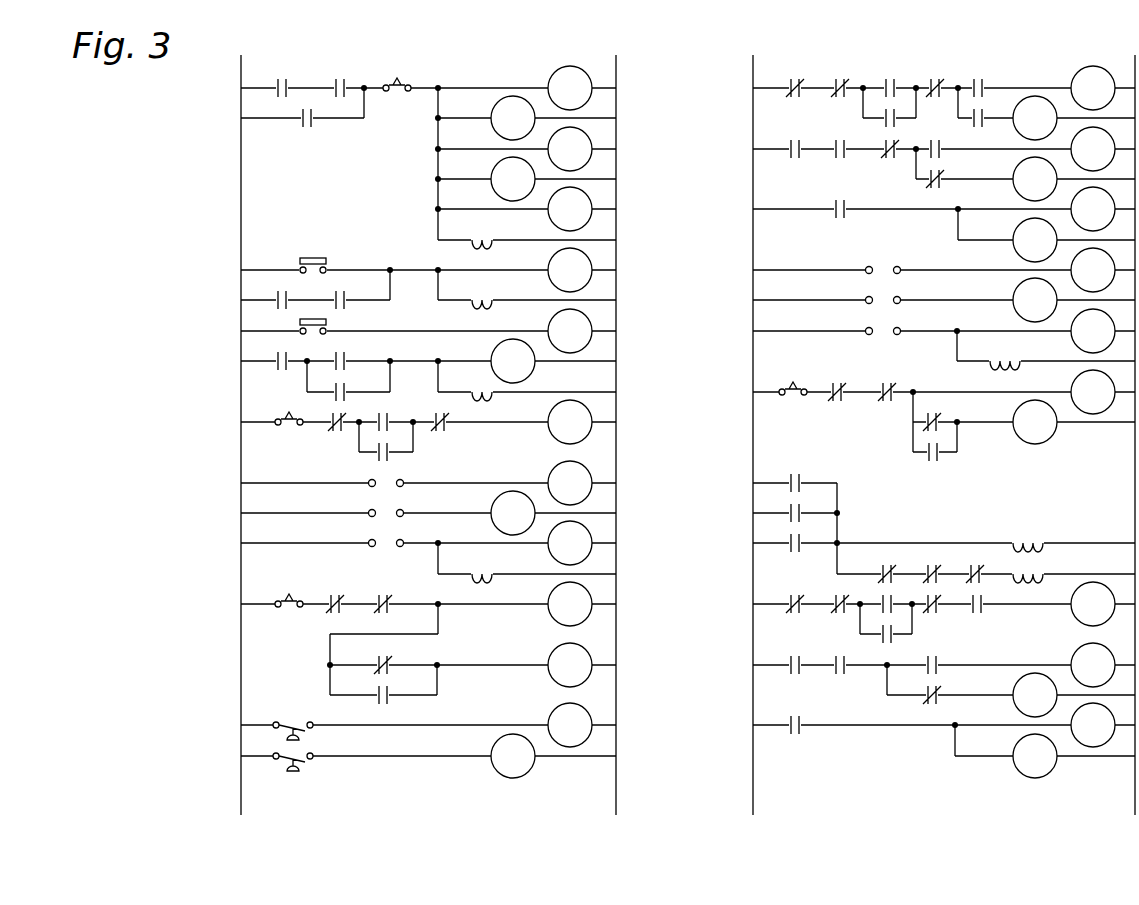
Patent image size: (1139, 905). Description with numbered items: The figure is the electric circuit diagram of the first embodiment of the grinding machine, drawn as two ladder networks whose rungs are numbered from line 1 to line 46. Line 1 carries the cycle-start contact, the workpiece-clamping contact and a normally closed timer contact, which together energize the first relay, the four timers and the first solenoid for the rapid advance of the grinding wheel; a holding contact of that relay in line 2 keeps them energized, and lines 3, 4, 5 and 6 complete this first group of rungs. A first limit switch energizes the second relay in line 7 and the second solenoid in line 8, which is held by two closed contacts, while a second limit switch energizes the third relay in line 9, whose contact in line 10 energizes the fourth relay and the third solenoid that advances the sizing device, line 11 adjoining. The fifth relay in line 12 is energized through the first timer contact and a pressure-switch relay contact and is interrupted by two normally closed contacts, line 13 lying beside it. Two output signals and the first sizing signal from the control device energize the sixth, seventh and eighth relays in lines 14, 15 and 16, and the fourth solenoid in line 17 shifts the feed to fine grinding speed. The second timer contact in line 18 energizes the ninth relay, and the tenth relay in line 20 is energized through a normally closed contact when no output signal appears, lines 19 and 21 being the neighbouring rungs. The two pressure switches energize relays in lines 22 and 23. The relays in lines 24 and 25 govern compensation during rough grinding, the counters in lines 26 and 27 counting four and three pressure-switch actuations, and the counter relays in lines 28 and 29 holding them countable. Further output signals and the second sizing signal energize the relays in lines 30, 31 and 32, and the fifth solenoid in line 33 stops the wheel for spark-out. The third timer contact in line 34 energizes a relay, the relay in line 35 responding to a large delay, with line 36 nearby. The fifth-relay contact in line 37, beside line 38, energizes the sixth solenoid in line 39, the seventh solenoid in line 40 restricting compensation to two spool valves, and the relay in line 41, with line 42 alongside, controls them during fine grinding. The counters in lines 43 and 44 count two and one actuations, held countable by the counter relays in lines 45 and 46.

The circuit line 1 is at (419, 86).
The circuit line 2 is at (419, 117).
The control circuit line 3 (TR2 timer) 3 is at (419, 149).
The control circuit line 4 (TR3 timer) 4 is at (419, 179).
The control circuit line 5 (TR4 timer) 5 is at (419, 209).
The control circuit line 6 (SOL1 solenoid) 6 is at (419, 234).
The circuit line 7 is at (419, 265).
The circuit line 8 is at (419, 294).
The circuit line 9 is at (419, 327).
The circuit line 10 is at (413, 360).
The control circuit line 11 (SOL3 solenoid) 11 is at (413, 386).
The circuit line 12 is at (413, 417).
The control circuit line 13 (Cr5 contact) 13 is at (312, 446).
The circuit line 14 is at (413, 482).
The circuit line 15 is at (413, 512).
The circuit line 16 is at (413, 542).
The circuit line 17 is at (413, 567).
The circuit line 18 is at (413, 599).
The control circuit line 19 is at (324, 635).
The circuit line 20 is at (413, 663).
The control circuit line 21 (cr10 contact) 21 is at (324, 688).
The circuit line 22 is at (413, 723).
The circuit line 23 is at (413, 756).
The circuit line 24 is at (929, 86).
The circuit line 25 is at (929, 117).
The circuit line 26 is at (929, 147).
The circuit line 27 is at (929, 179).
The circuit line 28 is at (929, 207).
The circuit line 29 is at (929, 240).
The circuit line 30 is at (929, 270).
The circuit line 31 is at (929, 300).
The circuit line 32 is at (929, 331).
The circuit line 33 is at (929, 354).
The circuit line 34 is at (929, 387).
The circuit line 35 is at (929, 421).
The control circuit line 36 (cr19 contact) 36 is at (848, 459).
The circuit line 37 is at (780, 476).
The control circuit line 38 (cr20 contact) 38 is at (781, 507).
The circuit line 39 is at (929, 535).
The circuit line 40 is at (929, 568).
The circuit line 41 is at (929, 605).
The control circuit line 42 (cr20 contact) 42 is at (817, 628).
The circuit line 43 is at (929, 663).
The circuit line 44 is at (929, 695).
The circuit line 45 is at (929, 723).
The circuit line 46 is at (929, 756).